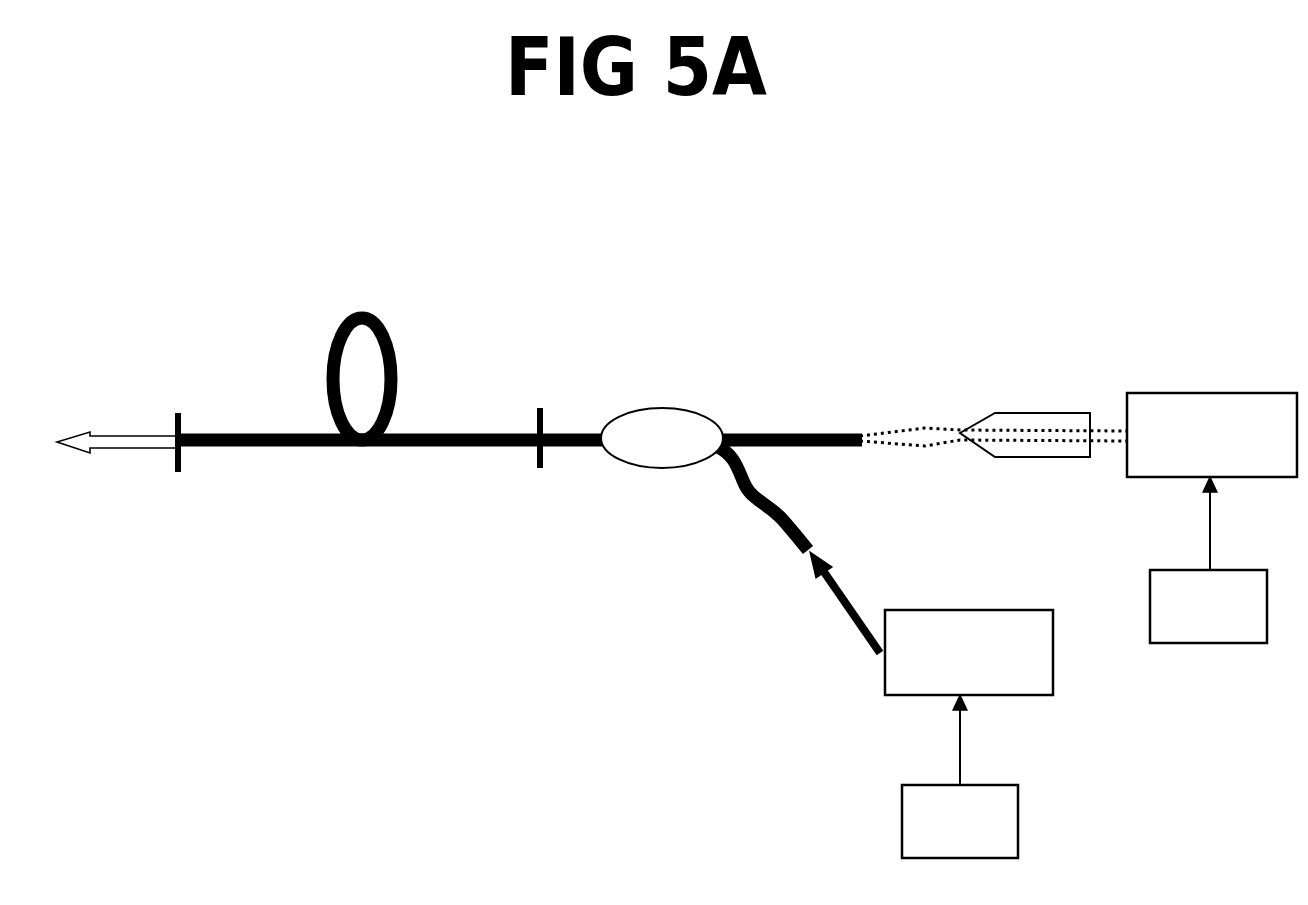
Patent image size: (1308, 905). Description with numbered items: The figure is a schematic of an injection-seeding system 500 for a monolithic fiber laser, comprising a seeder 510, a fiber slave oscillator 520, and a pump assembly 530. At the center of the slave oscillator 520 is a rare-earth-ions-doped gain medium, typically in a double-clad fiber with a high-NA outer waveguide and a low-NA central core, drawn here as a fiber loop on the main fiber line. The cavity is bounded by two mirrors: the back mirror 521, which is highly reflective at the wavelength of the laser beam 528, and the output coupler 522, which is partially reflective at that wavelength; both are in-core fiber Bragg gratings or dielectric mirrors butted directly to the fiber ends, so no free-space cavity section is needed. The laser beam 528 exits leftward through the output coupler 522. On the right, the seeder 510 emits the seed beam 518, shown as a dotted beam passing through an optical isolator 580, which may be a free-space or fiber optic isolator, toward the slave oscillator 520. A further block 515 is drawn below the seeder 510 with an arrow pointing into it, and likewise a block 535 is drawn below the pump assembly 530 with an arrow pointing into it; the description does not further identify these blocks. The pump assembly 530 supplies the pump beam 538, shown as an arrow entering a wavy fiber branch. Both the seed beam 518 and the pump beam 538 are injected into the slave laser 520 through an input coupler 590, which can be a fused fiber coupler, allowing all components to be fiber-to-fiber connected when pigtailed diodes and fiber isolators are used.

The injection-seeding system 500 is at (520, 347).
The seeder 510 is at (1212, 435).
The pump laser controller 515 is at (1208, 560).
The seed beam 518 is at (993, 413).
The fiber slave oscillator 520 is at (364, 411).
The back mirror 521 is at (538, 462).
The output coupler 522 is at (182, 468).
The laser beam 528 is at (117, 418).
The pump assembly 530 is at (969, 652).
The seed laser controller 535 is at (960, 776).
The pump beam 538 is at (817, 602).
The optical isolator 580 is at (1025, 435).
The input coupler 590 is at (662, 438).